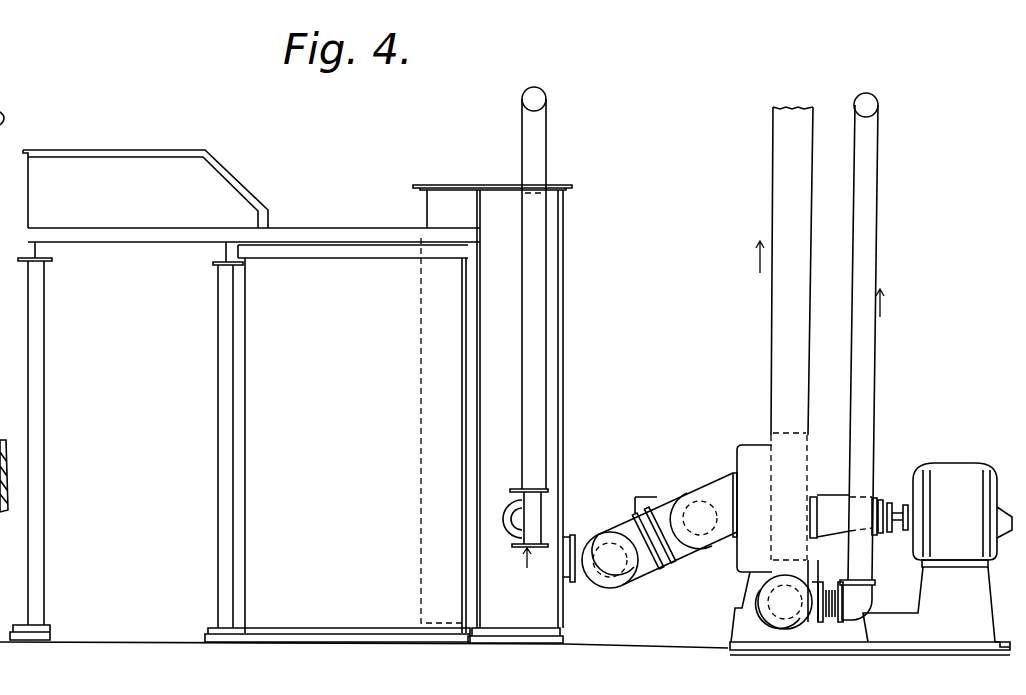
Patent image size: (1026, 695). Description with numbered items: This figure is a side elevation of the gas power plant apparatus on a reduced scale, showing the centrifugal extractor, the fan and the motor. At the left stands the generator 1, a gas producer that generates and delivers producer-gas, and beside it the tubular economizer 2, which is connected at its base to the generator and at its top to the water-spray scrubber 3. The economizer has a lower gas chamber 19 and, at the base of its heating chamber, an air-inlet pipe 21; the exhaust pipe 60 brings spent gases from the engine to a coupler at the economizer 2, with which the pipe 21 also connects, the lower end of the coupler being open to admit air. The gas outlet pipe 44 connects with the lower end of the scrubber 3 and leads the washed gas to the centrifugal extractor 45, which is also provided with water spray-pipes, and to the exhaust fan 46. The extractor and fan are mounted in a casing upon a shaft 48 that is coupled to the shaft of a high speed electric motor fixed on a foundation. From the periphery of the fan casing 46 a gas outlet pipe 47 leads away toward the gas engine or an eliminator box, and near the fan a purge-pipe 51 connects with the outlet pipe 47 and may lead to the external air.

The generator 1 is at (337, 443).
The tubular economizer 2 is at (563, 340).
The water-spray scrubber 3 is at (432, 212).
The exhaust pipe 60 is at (524, 147).
The air-inlet pipe 21 is at (513, 524).
The gas outlet pipe 44 is at (598, 536).
The centrifugal extractor 45 is at (700, 495).
The exhaust fan 46 is at (815, 453).
The gas outlet pipe 47 is at (772, 327).
The shaft 48 is at (900, 505).
The lower gas chamber 19 is at (997, 483).
The purge-pipe 51 is at (865, 341).